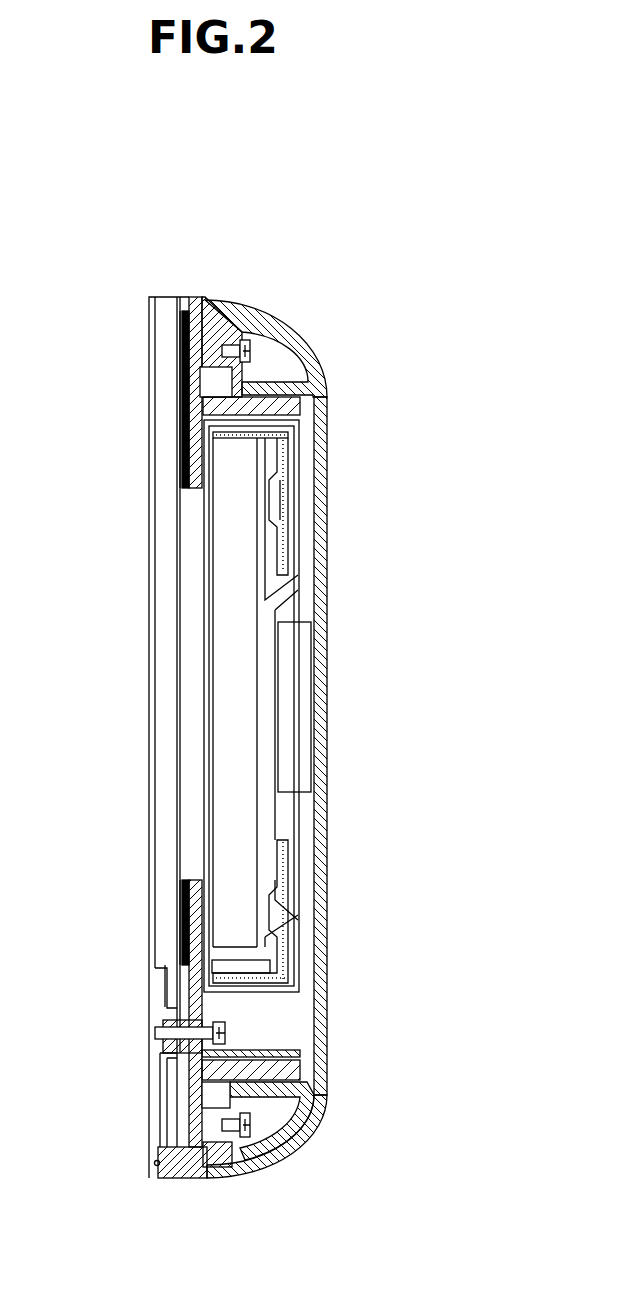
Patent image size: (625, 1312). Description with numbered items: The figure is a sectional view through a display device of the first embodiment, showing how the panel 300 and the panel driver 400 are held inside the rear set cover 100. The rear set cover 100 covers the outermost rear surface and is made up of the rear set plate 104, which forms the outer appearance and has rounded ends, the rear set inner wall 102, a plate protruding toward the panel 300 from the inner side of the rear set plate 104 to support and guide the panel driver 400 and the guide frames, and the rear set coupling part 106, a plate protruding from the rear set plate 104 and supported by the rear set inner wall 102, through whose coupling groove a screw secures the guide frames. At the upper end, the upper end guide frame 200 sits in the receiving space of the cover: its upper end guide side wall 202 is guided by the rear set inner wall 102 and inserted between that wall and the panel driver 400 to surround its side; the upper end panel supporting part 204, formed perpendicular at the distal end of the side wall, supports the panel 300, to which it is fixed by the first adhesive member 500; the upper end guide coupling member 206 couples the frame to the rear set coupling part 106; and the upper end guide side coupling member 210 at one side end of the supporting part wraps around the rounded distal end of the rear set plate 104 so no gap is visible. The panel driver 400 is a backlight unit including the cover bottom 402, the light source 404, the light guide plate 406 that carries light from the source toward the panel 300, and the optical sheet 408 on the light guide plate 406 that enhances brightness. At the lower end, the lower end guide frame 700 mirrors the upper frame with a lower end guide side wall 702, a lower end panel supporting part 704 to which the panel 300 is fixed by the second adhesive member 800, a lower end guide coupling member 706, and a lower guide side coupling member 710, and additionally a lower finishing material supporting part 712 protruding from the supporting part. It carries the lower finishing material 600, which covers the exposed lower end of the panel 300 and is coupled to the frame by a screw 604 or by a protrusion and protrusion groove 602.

The rear set cover 100 is at (415, 328).
The rear set inner wall 102 is at (285, 378).
The rear set plate 104 is at (322, 433).
The rear set coupling part 106 is at (248, 360).
The upper end guide frame 200 is at (260, 215).
The upper end guide side wall 202 is at (186, 400).
The upper end panel supporting part 204 is at (184, 318).
The upper end guide coupling member 206 is at (200, 345).
The upper end guide side coupling member 210 is at (210, 308).
The panel 300 is at (166, 552).
The panel driver 400 is at (410, 805).
The cover bottom 402 is at (293, 893).
The light source 404 is at (237, 953).
The light guide plate 406 is at (240, 820).
The optical sheet 408 is at (212, 777).
The first adhesive member 500 is at (181, 437).
The lower finishing material 600 is at (150, 1103).
The protrusion groove 602 is at (155, 1163).
The screw 604 is at (158, 1033).
The lower end guide frame 700 is at (408, 1018).
The lower end guide side wall 702 is at (296, 1070).
The lower end panel supporting part 704 is at (228, 997).
The lower end guide coupling member 706 is at (250, 1100).
The lower guide side coupling member 710 is at (218, 1162).
The lower finishing material supporting part 712 is at (226, 1020).
The second adhesive member 800 is at (181, 918).